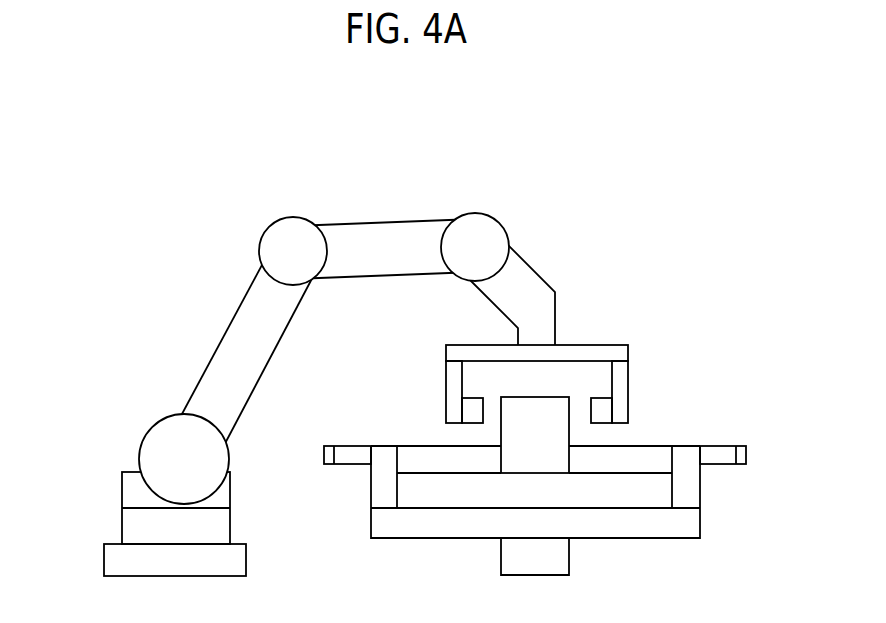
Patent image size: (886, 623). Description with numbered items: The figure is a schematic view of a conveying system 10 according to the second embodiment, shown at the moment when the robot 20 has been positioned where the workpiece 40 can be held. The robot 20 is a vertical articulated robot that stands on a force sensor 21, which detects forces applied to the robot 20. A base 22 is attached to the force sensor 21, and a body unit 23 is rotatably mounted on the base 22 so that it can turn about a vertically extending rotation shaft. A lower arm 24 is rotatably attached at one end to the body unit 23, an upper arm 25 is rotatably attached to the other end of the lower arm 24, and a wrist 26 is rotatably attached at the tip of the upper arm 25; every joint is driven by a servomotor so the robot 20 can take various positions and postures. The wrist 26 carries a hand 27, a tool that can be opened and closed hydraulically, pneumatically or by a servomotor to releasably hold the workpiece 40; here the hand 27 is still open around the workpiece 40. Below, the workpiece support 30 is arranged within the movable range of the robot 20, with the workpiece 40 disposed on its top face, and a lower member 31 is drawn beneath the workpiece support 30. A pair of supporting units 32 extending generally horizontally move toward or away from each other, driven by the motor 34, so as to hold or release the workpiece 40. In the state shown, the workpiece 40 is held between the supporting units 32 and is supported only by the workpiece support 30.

The conveying system 10 is at (29, 120).
The robot 20 is at (213, 237).
The force sensor 21 is at (118, 541).
The base 22 is at (232, 524).
The body unit 23 is at (130, 468).
The lower arm 24 is at (237, 304).
The upper arm 25 is at (368, 222).
The wrist 26 is at (557, 315).
The hand 27 is at (644, 364).
The workpiece support 30 is at (718, 490).
The support shaft 31 is at (570, 550).
The supporting unit 32 is at (429, 445).
The motor 34 is at (352, 445).
The workpiece 40 is at (570, 433).